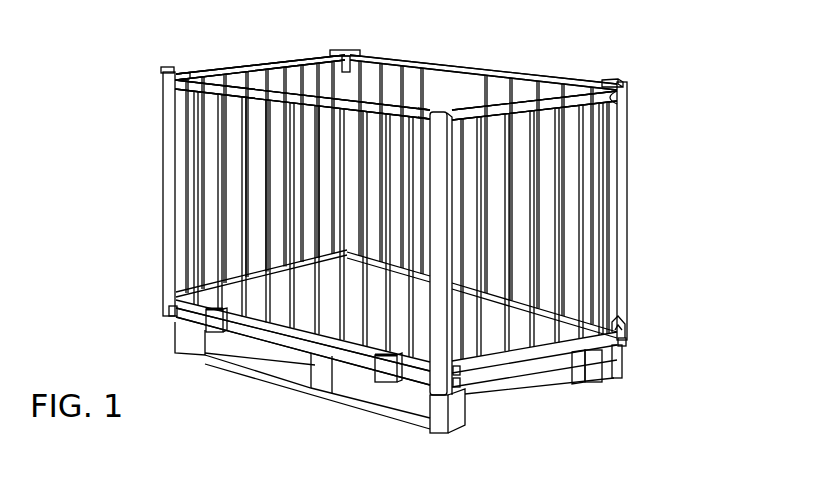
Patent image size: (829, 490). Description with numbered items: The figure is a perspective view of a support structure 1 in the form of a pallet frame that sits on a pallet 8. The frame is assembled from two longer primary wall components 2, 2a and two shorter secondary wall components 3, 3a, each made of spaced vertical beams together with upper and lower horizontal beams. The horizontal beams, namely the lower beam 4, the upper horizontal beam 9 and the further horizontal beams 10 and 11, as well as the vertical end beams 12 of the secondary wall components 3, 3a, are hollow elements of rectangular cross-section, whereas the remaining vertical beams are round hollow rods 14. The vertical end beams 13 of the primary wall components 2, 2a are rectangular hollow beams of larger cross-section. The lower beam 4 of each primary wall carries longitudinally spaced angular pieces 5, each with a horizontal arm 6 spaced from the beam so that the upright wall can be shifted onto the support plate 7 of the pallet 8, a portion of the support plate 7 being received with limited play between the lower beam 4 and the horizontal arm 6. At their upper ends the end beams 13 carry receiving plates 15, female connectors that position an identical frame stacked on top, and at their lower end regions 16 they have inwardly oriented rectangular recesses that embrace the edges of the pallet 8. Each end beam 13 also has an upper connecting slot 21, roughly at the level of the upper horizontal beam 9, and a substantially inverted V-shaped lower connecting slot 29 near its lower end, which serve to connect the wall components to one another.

The support structure 1 is at (166, 148).
The primary wall component 2 is at (505, 75).
The primary wall component 2a is at (417, 115).
The secondary wall component 3 is at (548, 97).
The secondary wall component 3a is at (230, 73).
The lower beam 4 is at (253, 324).
The angular piece 5 is at (207, 323).
The horizontal arm 6 is at (234, 325).
The support plate 7 is at (348, 360).
The pallet 8 is at (304, 380).
The upper horizontal beam 9 is at (398, 116).
The horizontal beam 10 is at (257, 72).
The horizontal beam 11 is at (234, 291).
The vertical end beam 12 is at (337, 82).
The vertical end beam 13 is at (166, 111).
The round hollow rod 14 is at (243, 223).
The receiving plate 15 is at (160, 72).
The lower end region 16 is at (170, 310).
The upper connecting slot 21 is at (621, 97).
The lower connecting slot 29 is at (630, 327).